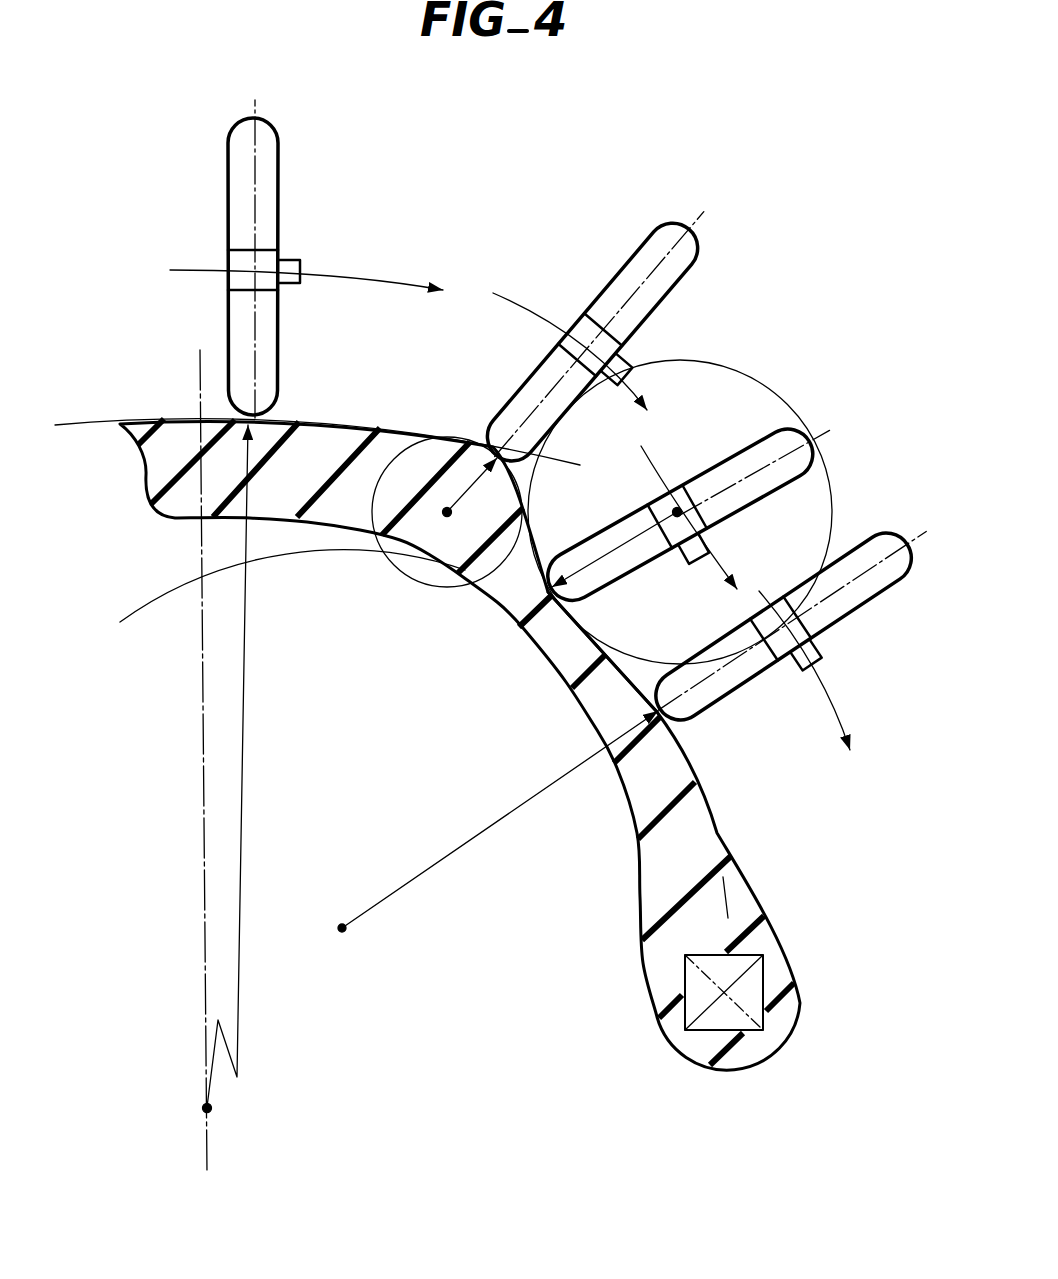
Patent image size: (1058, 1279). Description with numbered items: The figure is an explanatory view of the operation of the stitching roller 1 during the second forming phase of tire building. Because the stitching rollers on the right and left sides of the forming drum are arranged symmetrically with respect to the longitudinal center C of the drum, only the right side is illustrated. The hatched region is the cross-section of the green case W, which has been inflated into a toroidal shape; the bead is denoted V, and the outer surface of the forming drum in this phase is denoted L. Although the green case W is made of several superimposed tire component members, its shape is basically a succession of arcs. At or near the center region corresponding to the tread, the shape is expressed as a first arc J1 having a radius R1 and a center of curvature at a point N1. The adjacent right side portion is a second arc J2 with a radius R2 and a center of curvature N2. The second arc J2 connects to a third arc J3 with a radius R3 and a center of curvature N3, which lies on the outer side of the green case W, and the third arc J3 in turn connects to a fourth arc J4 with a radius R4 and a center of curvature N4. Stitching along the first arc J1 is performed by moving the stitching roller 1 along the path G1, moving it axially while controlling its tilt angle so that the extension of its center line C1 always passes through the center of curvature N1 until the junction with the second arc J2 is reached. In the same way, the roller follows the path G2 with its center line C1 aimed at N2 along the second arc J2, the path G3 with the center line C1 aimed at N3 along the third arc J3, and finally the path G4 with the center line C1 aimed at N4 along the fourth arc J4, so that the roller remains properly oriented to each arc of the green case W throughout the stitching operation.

The stitching roller 1 is at (246, 251).
The center line of the stitching roller C1 is at (258, 100).
The longitudinal center of the forming drum C is at (200, 731).
The green case W is at (157, 474).
The first arc J1 is at (95, 424).
The second arc J2 is at (430, 580).
The third arc J3 is at (727, 368).
The fourth arc J4 is at (163, 591).
The outer surface of the forming drum L is at (518, 624).
The path G1 is at (367, 271).
The path G2 is at (541, 312).
The path G3 is at (727, 574).
The path G4 is at (835, 708).
The radius of the first arc R1 is at (243, 732).
The radius of the second arc R2 is at (460, 493).
The radius of the third arc R3 is at (622, 552).
The radius of the fourth arc R4 is at (505, 818).
The center of curvature of the first arc N1 is at (210, 1108).
The center of curvature of the second arc N2 is at (396, 558).
The center of curvature of the third arc N3 is at (676, 506).
The center of curvature of the fourth arc N4 is at (345, 932).
The bead V is at (765, 962).